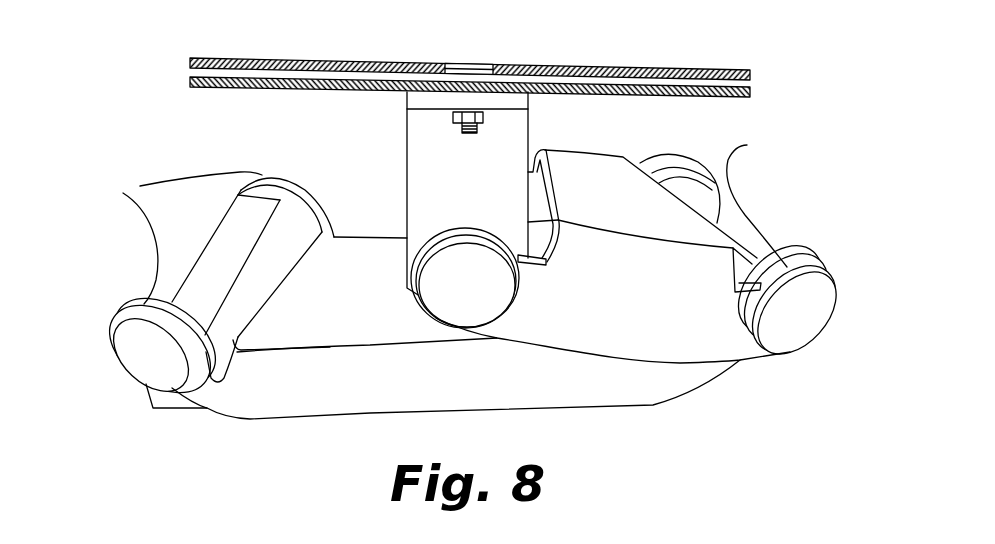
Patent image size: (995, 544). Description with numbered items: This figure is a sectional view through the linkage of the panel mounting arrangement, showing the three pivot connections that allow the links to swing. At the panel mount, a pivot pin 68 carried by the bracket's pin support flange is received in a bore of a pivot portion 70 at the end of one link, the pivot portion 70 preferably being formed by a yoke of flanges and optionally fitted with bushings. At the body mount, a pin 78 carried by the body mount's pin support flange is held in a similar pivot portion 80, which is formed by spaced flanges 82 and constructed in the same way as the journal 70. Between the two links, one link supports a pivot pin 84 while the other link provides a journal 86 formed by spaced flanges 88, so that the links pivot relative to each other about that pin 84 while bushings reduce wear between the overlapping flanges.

The pivot pin 68 is at (485, 297).
The pivot portion 70 is at (488, 225).
The pin 78 is at (140, 356).
The pivot portion 80 is at (190, 337).
The spaced flanges 82 is at (140, 186).
The pivot pin 84 is at (813, 304).
The journal 86 is at (805, 259).
The spaced flanges 88 is at (670, 162).